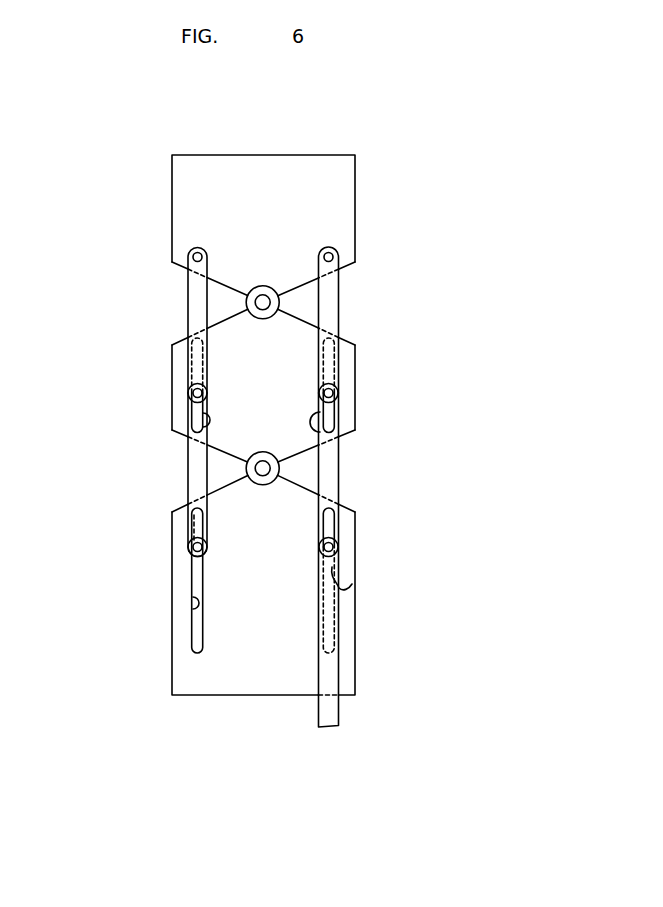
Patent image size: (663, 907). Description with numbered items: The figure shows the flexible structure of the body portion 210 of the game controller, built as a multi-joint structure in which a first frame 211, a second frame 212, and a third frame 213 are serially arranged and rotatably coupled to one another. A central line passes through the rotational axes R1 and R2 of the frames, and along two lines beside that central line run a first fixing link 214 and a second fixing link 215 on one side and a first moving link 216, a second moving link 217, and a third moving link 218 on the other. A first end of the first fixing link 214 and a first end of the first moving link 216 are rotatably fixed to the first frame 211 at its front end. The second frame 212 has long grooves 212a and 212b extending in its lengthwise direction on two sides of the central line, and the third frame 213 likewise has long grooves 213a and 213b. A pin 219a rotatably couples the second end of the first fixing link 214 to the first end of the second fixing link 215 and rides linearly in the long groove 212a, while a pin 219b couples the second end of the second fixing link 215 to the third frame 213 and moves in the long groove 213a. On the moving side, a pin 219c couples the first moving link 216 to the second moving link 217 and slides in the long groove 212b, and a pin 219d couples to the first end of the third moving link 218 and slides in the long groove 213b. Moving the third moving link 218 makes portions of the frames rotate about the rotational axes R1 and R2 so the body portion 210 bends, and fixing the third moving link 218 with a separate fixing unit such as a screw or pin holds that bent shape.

The body portion 210 is at (395, 153).
The first frame 211 is at (354, 194).
The second frame 212 is at (355, 364).
The third frame 213 is at (352, 617).
The first fixing link 214 is at (200, 301).
The second fixing link 215 is at (192, 458).
The first moving link 216 is at (333, 305).
The second moving link 217 is at (338, 472).
The third moving link 218 is at (332, 710).
The rotational axis R1 is at (266, 299).
The rotational axis R2 is at (268, 474).
The pin 219a is at (197, 393).
The pin 219b is at (197, 547).
The pin 219c is at (338, 395).
The pin 219d is at (338, 547).
The long groove 212a is at (200, 421).
The long groove 212b is at (342, 437).
The long groove 213a is at (192, 617).
The long groove 213b is at (352, 584).